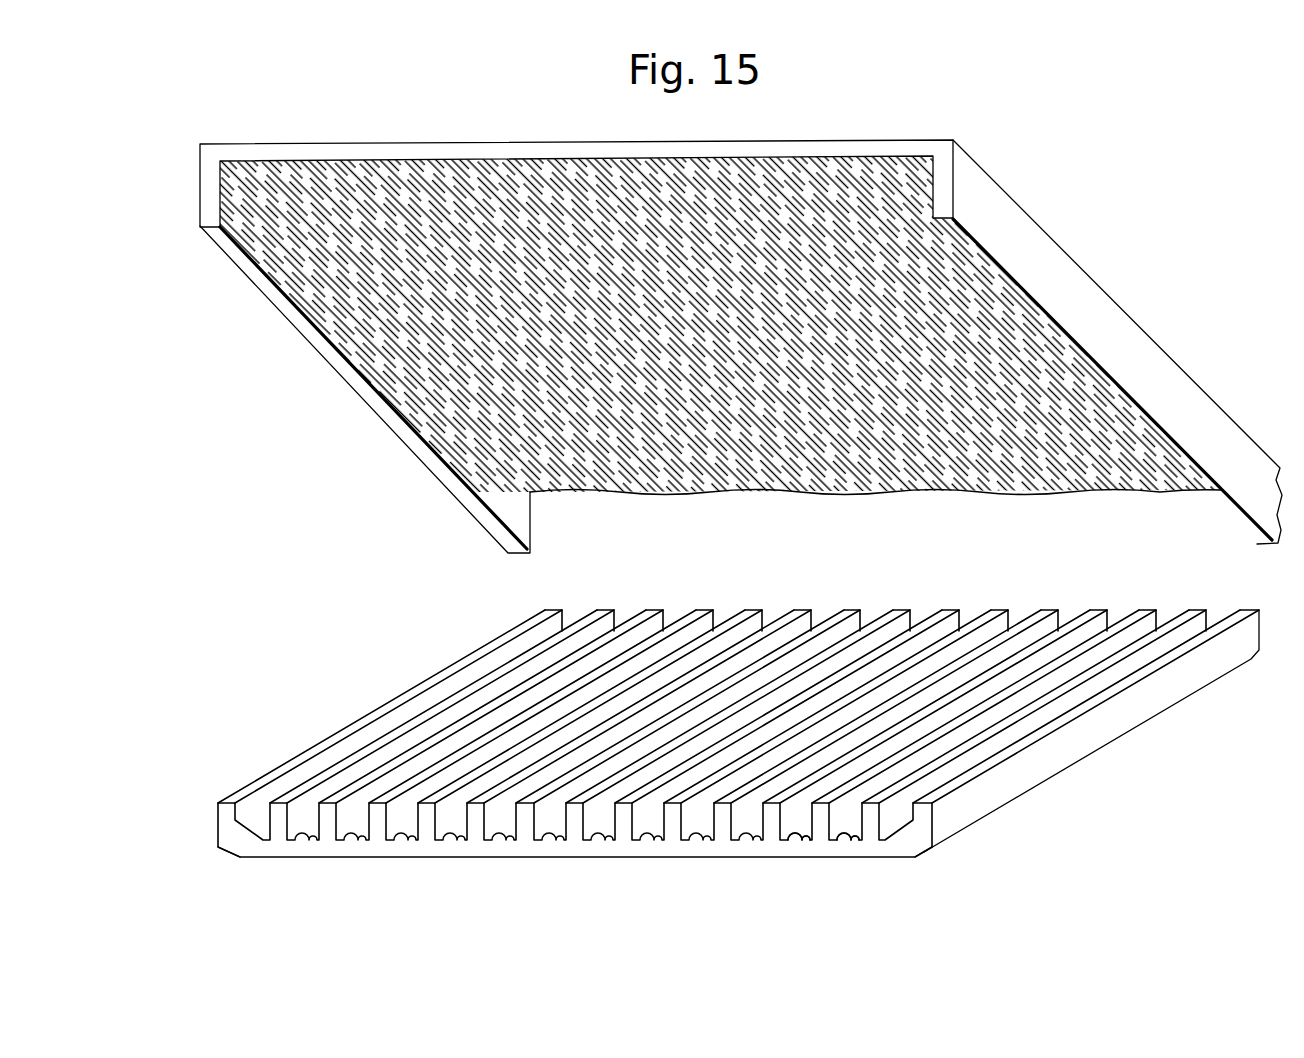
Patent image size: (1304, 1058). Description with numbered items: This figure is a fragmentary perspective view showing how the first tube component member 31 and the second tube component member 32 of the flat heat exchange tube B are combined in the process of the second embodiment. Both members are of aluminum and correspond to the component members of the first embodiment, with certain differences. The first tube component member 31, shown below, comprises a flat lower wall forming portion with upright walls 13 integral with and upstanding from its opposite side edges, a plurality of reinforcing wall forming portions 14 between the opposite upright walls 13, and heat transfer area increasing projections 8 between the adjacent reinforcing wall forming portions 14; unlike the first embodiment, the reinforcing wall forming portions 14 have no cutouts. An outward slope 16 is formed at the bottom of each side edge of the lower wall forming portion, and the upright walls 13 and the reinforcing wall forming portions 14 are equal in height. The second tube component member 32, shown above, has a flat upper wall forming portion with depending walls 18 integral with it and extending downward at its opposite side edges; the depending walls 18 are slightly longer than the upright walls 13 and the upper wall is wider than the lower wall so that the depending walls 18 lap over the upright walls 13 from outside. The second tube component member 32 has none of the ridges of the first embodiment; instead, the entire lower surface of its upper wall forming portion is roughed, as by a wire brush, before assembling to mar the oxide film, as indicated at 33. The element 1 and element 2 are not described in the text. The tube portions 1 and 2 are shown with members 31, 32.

The heat sink assembly 1 is at (888, 148).
The base plate 2 is at (646, 850).
The heat transfer area increasing projections 8 is at (842, 838).
The upright walls 13 is at (227, 807).
The reinforcing wall forming portions 14 is at (427, 820).
The outward slope 16 is at (228, 853).
The depending walls 18 is at (440, 470).
The first tube component member 31 is at (712, 773).
The second tube component member 32 is at (741, 323).
The roughed lower surface 33 is at (405, 293).